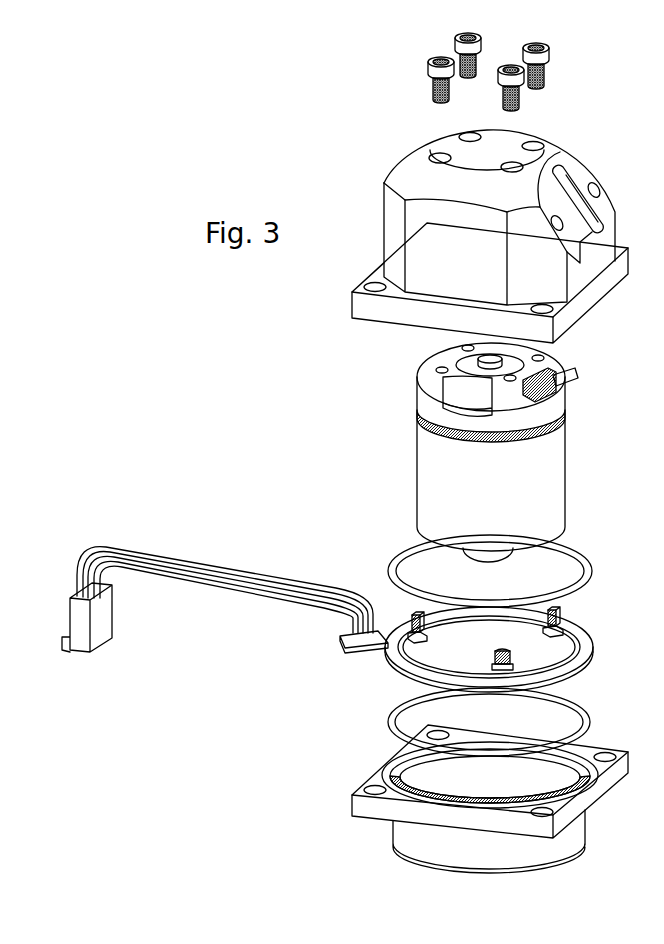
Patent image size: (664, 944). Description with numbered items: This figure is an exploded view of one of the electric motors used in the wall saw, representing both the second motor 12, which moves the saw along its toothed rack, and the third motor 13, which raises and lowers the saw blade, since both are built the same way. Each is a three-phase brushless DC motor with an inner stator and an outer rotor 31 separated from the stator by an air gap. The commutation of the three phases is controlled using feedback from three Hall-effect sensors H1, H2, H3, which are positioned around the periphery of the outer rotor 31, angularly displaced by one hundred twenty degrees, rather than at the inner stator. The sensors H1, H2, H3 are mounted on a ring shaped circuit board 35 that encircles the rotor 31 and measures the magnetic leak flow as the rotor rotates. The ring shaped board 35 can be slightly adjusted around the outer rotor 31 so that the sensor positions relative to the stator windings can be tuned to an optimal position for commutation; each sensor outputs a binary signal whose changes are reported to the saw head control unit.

The second motor 12 is at (298, 452).
The third motor 13 is at (356, 453).
The outer rotor 31 is at (547, 493).
The ring shaped circuit board 35 is at (578, 657).
The Hall-effect sensor H1 is at (560, 617).
The Hall-effect sensor H2 is at (500, 657).
The Hall-effect sensor H3 is at (383, 645).